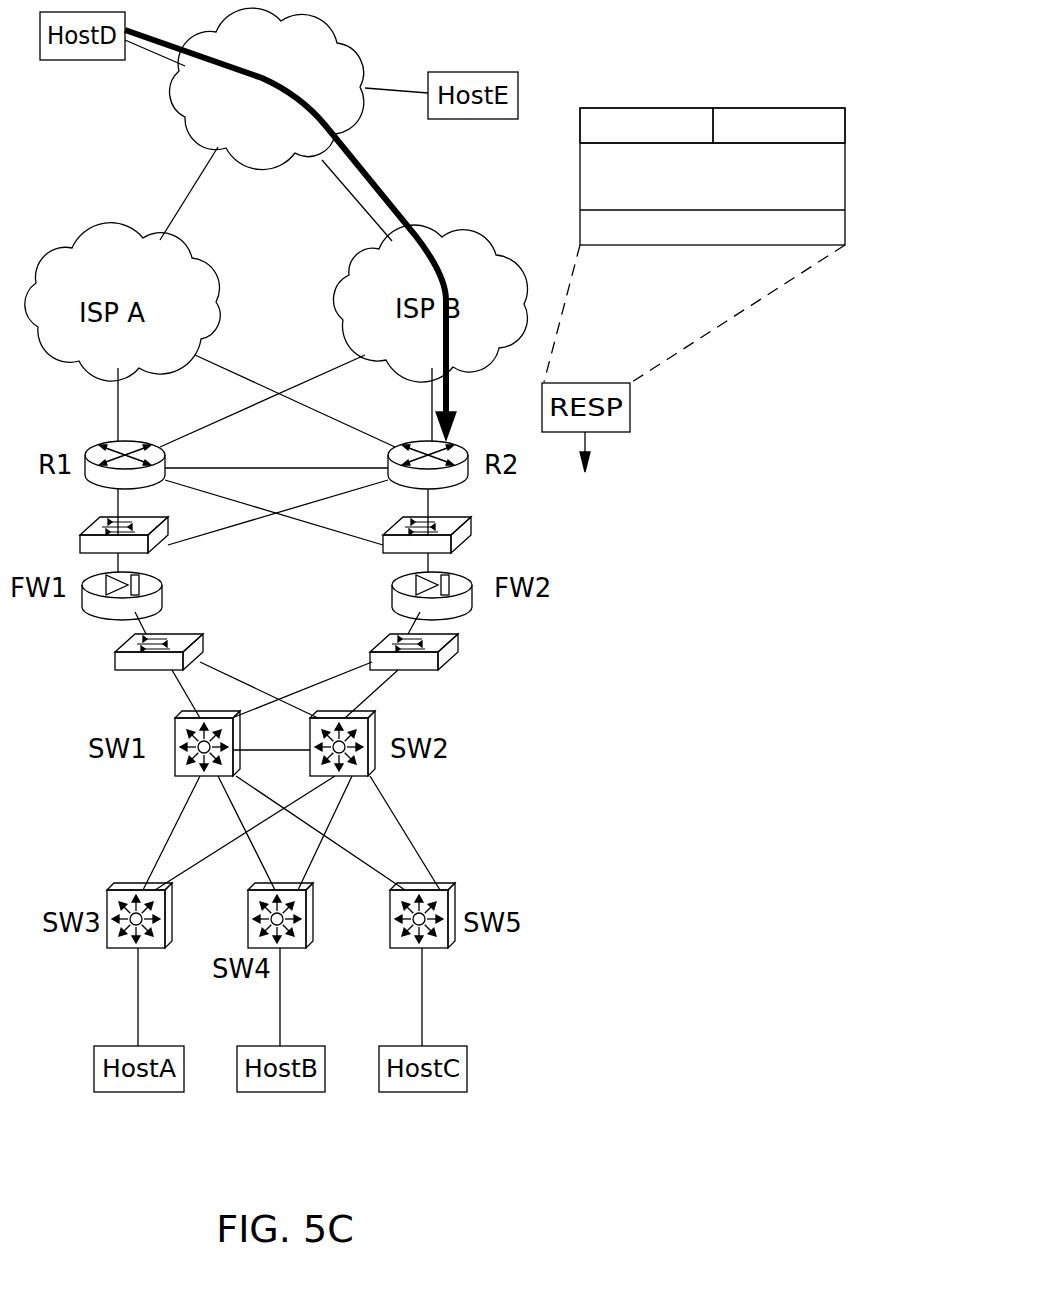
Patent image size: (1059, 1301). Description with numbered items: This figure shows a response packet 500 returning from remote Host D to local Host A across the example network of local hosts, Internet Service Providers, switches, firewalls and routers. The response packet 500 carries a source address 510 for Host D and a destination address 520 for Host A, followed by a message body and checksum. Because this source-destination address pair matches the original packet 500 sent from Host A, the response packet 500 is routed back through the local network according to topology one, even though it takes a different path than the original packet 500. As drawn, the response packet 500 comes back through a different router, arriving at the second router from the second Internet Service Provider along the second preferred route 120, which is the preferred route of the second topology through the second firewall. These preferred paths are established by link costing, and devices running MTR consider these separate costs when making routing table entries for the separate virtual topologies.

The second preferred route 120 is at (448, 388).
The packet 500 is at (845, 183).
The source address 510 is at (638, 108).
The destination address 520 is at (760, 108).